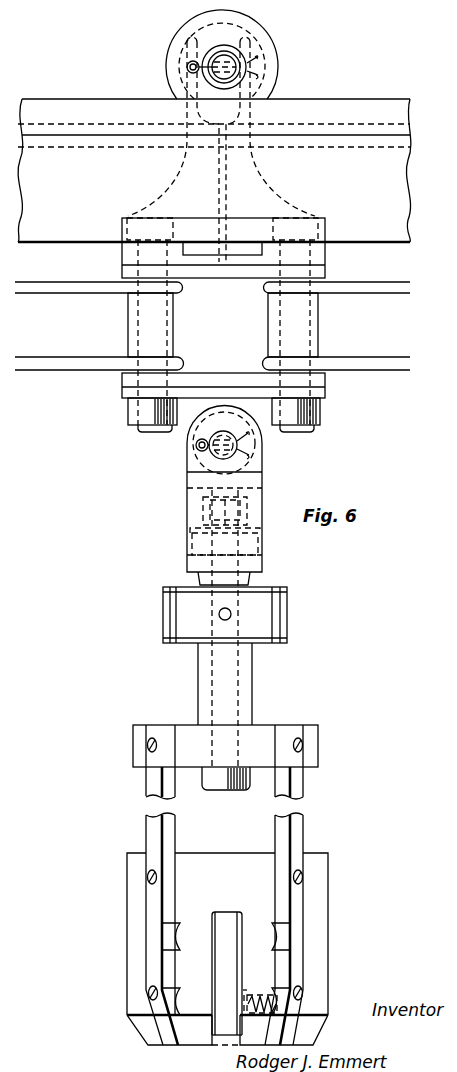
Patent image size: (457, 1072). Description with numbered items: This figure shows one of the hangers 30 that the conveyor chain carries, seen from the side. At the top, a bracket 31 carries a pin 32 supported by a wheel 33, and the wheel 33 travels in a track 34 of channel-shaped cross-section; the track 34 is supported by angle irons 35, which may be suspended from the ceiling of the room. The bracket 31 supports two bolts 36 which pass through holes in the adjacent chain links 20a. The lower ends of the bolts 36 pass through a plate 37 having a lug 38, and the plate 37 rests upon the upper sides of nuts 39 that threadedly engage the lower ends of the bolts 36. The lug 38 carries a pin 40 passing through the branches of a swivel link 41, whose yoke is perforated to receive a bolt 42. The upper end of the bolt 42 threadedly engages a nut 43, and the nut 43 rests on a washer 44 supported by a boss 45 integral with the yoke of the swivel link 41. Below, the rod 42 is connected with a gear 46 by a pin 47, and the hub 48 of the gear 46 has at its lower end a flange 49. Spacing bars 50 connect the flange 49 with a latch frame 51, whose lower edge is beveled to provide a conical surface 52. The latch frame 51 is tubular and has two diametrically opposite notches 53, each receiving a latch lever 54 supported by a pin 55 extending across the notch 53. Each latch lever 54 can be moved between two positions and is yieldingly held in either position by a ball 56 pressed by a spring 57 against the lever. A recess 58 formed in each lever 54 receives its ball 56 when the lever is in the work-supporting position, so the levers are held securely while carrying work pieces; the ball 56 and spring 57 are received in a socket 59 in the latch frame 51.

The chain links 20a is at (67, 282).
The hanger 30 is at (373, 629).
The bracket 31 is at (268, 172).
The pin 32 is at (237, 60).
The wheel 33 is at (268, 42).
The track 34 is at (345, 99).
The angle irons 35 is at (392, 169).
The bolts 36 is at (136, 316).
The plate 37 is at (124, 392).
The lug 38 is at (198, 412).
The nuts 39 is at (128, 413).
The pin 40 is at (258, 452).
The swivel link 41 is at (187, 503).
The bolt 42 is at (240, 677).
The nut 43 is at (250, 506).
The washer 44 is at (190, 530).
The boss 45 is at (192, 548).
The gear 46 is at (163, 605).
The pin 47 is at (221, 619).
The hub 48 is at (198, 674).
The flange 49 is at (133, 740).
The spacing bars 50 is at (146, 820).
The latch frame 51 is at (128, 905).
The conical surface 52 is at (145, 1027).
The notches 53 is at (226, 911).
The latch lever 54 is at (222, 979).
The pin 55 is at (280, 934).
The ball 56 is at (248, 990).
The spring 57 is at (258, 1015).
The recess 58 is at (244, 1003).
The socket 59 is at (269, 995).